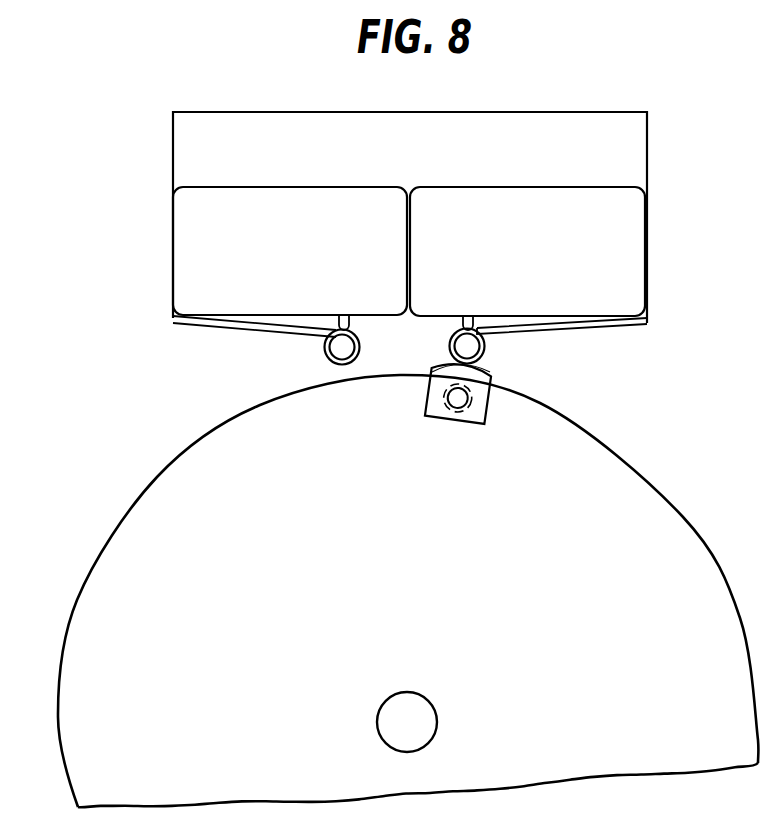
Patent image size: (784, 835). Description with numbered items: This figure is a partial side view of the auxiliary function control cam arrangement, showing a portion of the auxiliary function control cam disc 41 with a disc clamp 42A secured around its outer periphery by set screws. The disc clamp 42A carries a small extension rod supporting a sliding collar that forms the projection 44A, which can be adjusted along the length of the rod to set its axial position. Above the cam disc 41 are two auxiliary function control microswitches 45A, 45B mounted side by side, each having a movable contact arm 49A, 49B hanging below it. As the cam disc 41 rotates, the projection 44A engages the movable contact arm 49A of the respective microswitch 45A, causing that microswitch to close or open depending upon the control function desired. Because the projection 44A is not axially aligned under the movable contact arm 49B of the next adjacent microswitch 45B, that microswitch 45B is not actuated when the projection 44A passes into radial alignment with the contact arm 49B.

The auxiliary function control cam disc 41 is at (155, 492).
The disc clamp 42A is at (488, 418).
The sliding collar projection 44A is at (493, 381).
The auxiliary function control microswitch 45A is at (537, 210).
The next adjacent auxiliary function control microswitch 45B is at (330, 203).
The movable contact arm 49A is at (486, 343).
The movable contact arm 49B is at (324, 352).